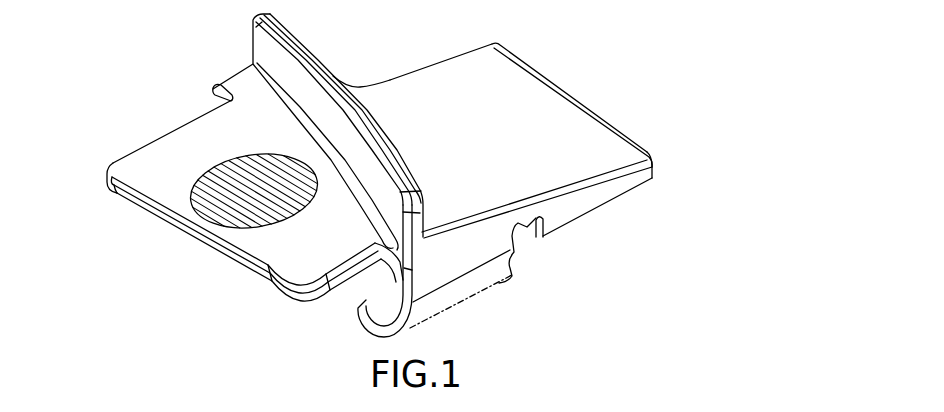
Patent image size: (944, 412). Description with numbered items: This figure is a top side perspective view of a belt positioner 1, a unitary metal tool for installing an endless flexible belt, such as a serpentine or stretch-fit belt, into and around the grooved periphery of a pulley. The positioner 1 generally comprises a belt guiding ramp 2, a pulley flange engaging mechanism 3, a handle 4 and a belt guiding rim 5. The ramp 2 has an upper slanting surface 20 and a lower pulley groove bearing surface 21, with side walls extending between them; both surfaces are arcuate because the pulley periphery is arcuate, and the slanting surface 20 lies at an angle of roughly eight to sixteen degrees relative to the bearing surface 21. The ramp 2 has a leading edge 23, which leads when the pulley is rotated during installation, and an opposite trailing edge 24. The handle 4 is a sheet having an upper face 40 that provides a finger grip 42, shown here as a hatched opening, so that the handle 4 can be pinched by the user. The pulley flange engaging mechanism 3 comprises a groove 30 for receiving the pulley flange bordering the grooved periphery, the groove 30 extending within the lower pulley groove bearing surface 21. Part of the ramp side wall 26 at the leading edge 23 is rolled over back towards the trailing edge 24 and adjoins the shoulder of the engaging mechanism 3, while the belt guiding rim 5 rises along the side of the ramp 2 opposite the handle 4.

The belt positioner 1 is at (158, 251).
The belt guiding ramp 2 is at (463, 55).
The pulley flange engaging mechanism 3 is at (507, 278).
The handle 4 is at (160, 152).
The belt guiding rim 5 is at (257, 18).
The upper slanting surface 20 is at (471, 137).
The lower pulley groove bearing surface 21 is at (576, 222).
The leading edge 23 is at (604, 186).
The trailing edge 24 is at (391, 82).
The side wall 26 is at (471, 287).
The groove 30 is at (526, 244).
The upper face 40 is at (120, 174).
The finger grip 42 is at (233, 225).